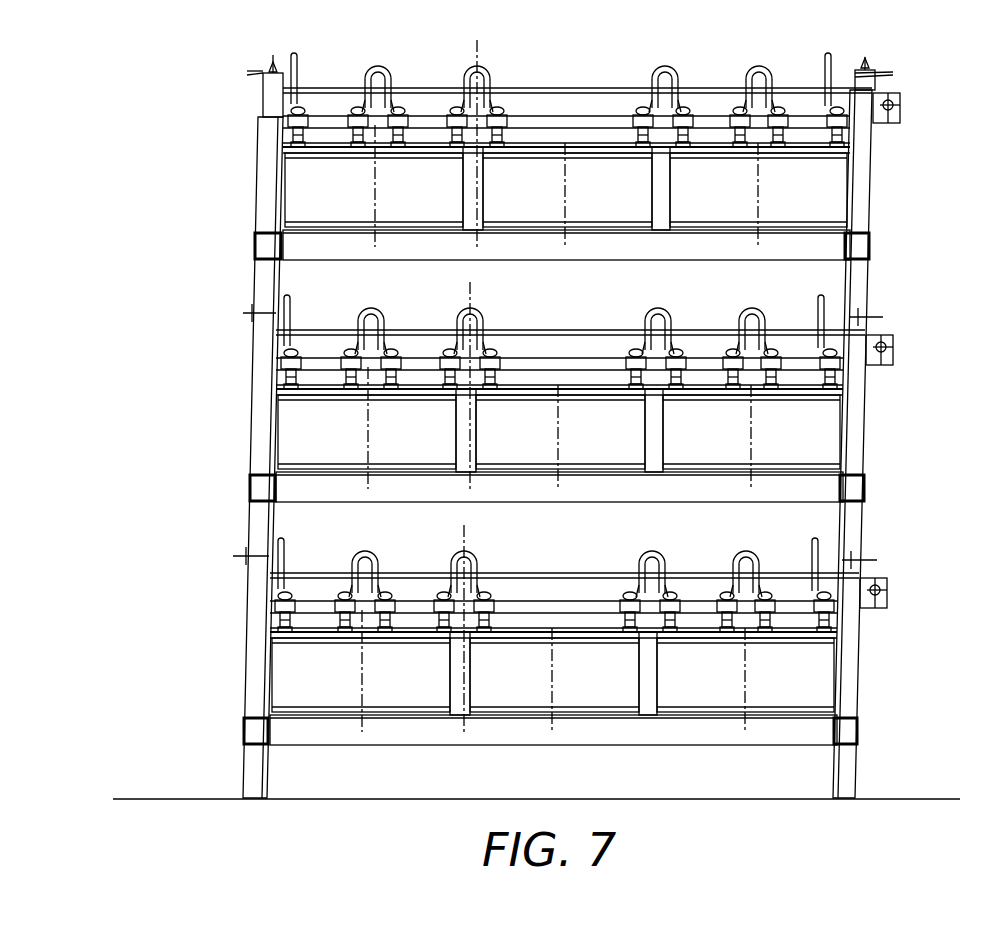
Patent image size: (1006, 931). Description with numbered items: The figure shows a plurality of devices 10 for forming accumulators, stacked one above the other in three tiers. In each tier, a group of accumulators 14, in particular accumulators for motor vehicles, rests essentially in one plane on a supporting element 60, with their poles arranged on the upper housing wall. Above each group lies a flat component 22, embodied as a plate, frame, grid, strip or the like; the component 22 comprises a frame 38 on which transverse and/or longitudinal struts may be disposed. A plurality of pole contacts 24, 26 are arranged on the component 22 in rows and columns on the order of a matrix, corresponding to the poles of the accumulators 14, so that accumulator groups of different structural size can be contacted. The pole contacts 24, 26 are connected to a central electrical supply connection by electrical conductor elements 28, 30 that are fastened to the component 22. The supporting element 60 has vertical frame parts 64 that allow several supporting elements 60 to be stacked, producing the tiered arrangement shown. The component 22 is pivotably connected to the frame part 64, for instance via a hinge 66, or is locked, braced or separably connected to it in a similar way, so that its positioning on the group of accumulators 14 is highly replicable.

The device 10 is at (170, 171).
The accumulator 14 is at (307, 208).
The flat component 22 is at (710, 72).
The pole contact 24 is at (293, 138).
The pole contact 26 is at (407, 113).
The electrical conductor element 28 is at (397, 54).
The electrical conductor element 30 is at (488, 72).
The frame 38 is at (562, 102).
The supporting element 60 is at (317, 243).
The vertical frame part 64 is at (865, 162).
The hinge 66 is at (900, 110).